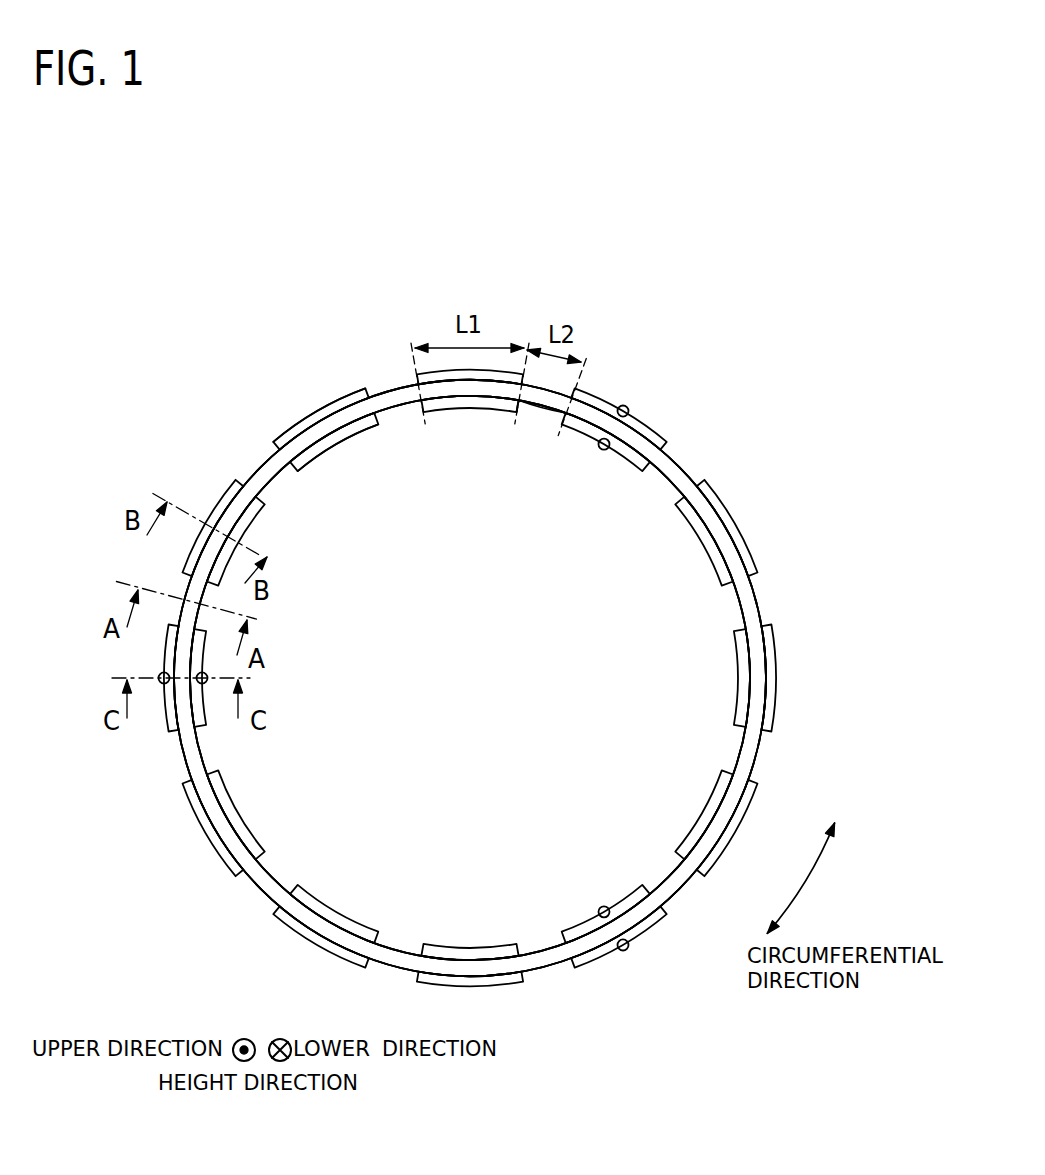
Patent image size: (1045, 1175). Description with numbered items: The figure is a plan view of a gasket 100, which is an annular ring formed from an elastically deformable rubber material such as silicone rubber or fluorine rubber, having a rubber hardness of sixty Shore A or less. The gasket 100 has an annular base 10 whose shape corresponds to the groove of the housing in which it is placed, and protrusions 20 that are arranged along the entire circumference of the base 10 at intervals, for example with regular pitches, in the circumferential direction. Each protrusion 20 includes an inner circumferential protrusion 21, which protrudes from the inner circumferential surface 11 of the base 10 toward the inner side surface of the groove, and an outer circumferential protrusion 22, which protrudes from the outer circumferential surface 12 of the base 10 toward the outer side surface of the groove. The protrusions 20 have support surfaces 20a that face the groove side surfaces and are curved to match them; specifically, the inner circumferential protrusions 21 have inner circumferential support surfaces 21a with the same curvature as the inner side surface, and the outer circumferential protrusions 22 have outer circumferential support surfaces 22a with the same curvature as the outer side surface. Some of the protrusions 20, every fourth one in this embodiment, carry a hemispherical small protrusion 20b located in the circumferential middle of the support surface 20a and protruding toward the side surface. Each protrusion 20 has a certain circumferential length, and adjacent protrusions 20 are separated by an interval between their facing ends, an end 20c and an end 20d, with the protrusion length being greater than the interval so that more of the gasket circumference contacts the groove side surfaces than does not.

The gasket 100 is at (703, 302).
The base 10 is at (387, 391).
The inner circumferential surface 11 is at (666, 478).
The outer circumferential surface 12 is at (678, 456).
The protrusions 20 is at (470, 670).
The inner circumferential protrusion 21 is at (312, 458).
The outer circumferential protrusion 22 is at (278, 438).
The support surfaces 20a is at (348, 410).
The inner circumferential support surface 21a is at (355, 430).
The outer circumferential support surface 22a is at (312, 417).
The small protrusion 20b is at (623, 402).
The end 20c is at (514, 405).
The end 20d is at (562, 414).